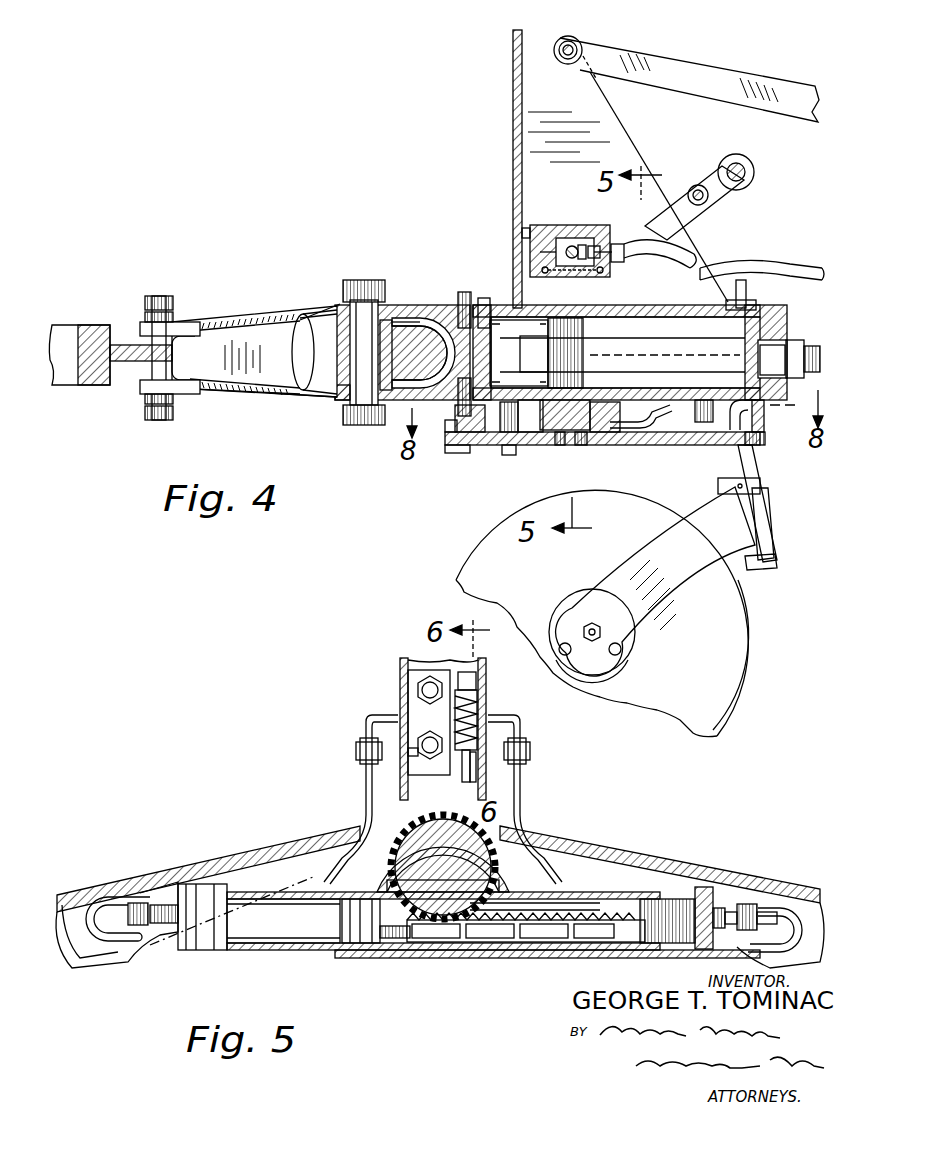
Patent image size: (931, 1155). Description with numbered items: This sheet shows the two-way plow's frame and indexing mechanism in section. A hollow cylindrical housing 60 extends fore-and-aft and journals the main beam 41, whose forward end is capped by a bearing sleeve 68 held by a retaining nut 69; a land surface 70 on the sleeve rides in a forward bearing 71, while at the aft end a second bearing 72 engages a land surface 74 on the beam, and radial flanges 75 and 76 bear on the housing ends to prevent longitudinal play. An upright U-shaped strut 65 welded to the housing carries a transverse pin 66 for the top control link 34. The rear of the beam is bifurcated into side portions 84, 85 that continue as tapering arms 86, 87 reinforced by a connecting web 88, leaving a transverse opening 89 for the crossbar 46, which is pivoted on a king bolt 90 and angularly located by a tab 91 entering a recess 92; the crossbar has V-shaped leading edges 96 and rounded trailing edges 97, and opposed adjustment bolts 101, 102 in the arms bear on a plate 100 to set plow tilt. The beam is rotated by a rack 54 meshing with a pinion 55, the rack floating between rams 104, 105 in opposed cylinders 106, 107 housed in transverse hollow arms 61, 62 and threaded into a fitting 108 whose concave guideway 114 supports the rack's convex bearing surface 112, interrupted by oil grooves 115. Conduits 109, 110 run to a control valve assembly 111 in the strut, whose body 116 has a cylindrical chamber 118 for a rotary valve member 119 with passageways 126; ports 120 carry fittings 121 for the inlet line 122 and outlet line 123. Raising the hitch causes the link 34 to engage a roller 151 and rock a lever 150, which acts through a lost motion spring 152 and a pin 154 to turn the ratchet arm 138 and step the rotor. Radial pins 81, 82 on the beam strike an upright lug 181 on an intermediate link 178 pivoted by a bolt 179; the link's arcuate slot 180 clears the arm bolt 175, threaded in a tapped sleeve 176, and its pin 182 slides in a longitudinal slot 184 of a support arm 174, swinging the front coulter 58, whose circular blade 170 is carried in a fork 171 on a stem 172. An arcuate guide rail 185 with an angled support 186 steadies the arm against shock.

In FIG. 4, the top control link 34 is at (760, 80).
In FIG. 4, the main beam 41 is at (327, 302).
In FIG. 5, the main beam 41 is at (514, 854).
In FIG. 4, the crossbar 46 is at (296, 394).
In FIG. 4, the rack 54 is at (594, 446).
In FIG. 5, the rack 54 is at (574, 908).
In FIG. 4, the pinion 55 is at (582, 350).
In FIG. 5, the pinion 55 is at (508, 820).
In FIG. 4, the front coulter 58 is at (770, 570).
In FIG. 4, the hollow cylindrical housing 60 is at (674, 320).
In FIG. 5, the transverse hollow arm 61 is at (220, 858).
In FIG. 5, the transverse hollow arm 62 is at (674, 866).
In FIG. 4, the upright U-shaped strut 65 is at (513, 58).
In FIG. 5, the upright U-shaped strut 65 is at (400, 668).
In FIG. 4, the transverse pin 66 is at (578, 40).
In FIG. 4, the bearing sleeve 68 is at (792, 334).
In FIG. 4, the retaining nut 69 is at (802, 364).
In FIG. 4, the land surface 70 is at (732, 306).
In FIG. 4, the forward bearing 71 is at (738, 376).
In FIG. 4, the second bearing 72 is at (498, 322).
In FIG. 4, the land surface 74 is at (522, 368).
In FIG. 4, the radial flange 75 is at (748, 296).
In FIG. 4, the radial flange 76 is at (485, 305).
In FIG. 4, the rigid pin 81 is at (465, 290).
In FIG. 4, the rigid pin 82 is at (480, 384).
In FIG. 4, the side portion 84 is at (436, 304).
In FIG. 4, the side portion 85 is at (340, 400).
In FIG. 4, the tapering rearwardly extending arm 86 is at (222, 326).
In FIG. 4, the tapering rearwardly extending arm 87 is at (236, 392).
In FIG. 4, the connecting web 88 is at (250, 340).
In FIG. 4, the transverse opening 89 is at (304, 320).
In FIG. 4, the king bolt 90 is at (360, 280).
In FIG. 4, the tab 91 is at (428, 326).
In FIG. 4, the recess 92 is at (418, 322).
In FIG. 4, the leading edge 96 is at (388, 322).
In FIG. 4, the trailing edge 97 is at (318, 354).
In FIG. 4, the plate 100 is at (92, 330).
In FIG. 4, the adjustment bolt 101 is at (159, 294).
In FIG. 4, the adjustment bolt 102 is at (158, 420).
In FIG. 5, the ram 104 is at (340, 890).
In FIG. 5, the ram 105 is at (680, 946).
In FIG. 5, the hydraulic cylinder 106 is at (280, 950).
In FIG. 5, the hydraulic cylinder 107 is at (648, 884).
In FIG. 4, the fitting 108 is at (610, 408).
In FIG. 5, the fitting 108 is at (400, 960).
In FIG. 5, the conduit 109 is at (120, 953).
In FIG. 5, the conduit 110 is at (806, 900).
In FIG. 4, the control valve assembly 111 is at (514, 230).
In FIG. 5, the control valve assembly 111 is at (418, 664).
In FIG. 4, the convex lower bearing surface 112 is at (558, 442).
In FIG. 5, the convex lower bearing surface 112 is at (608, 946).
In FIG. 4, the concave saddle or guideway 114 is at (580, 448).
In FIG. 5, the concave saddle or guideway 114 is at (490, 946).
In FIG. 5, the oil grooves 115 is at (544, 952).
In FIG. 4, the valve body 116 is at (536, 222).
In FIG. 5, the valve body 116 is at (410, 706).
In FIG. 4, the cylindrical chamber 118 is at (596, 246).
In FIG. 4, the movable valve member 119 is at (582, 244).
In FIG. 4, the passages or ports 120 is at (542, 268).
In FIG. 4, the fitting 121 is at (626, 256).
In FIG. 5, the fitting 121 is at (360, 745).
In FIG. 4, the inlet line 122 is at (682, 240).
In FIG. 5, the inlet line 122 is at (418, 690).
In FIG. 4, the outlet line 123 is at (792, 268).
In FIG. 5, the outlet line 123 is at (406, 762).
In FIG. 4, the passageway 126 is at (568, 246).
In FIG. 5, the ratchet arm 138 is at (460, 782).
In FIG. 4, the lever 150 is at (680, 205).
In FIG. 5, the lever 150 is at (478, 682).
In FIG. 4, the roller 151 is at (754, 166).
In FIG. 5, the lost motion spring 152 is at (478, 712).
In FIG. 5, the pin 154 is at (480, 780).
In FIG. 4, the circular blade 170 is at (716, 666).
In FIG. 4, the fork 171 is at (676, 562).
In FIG. 4, the stem 172 is at (770, 474).
In FIG. 4, the support arm 174 is at (698, 448).
In FIG. 4, the bolt 175 is at (512, 456).
In FIG. 4, the tapped sleeve 176 is at (498, 446).
In FIG. 4, the intermediate link 178 is at (646, 446).
In FIG. 4, the bolt 179 is at (700, 446).
In FIG. 4, the arcuate slot 180 is at (536, 448).
In FIG. 4, the upright lug or boss 181 is at (446, 444).
In FIG. 4, the projection or pin 182 is at (470, 446).
In FIG. 4, the longitudinal slot 184 is at (454, 454).
In FIG. 4, the arcuate guide rail 185 is at (758, 446).
In FIG. 4, the angled support 186 is at (756, 412).